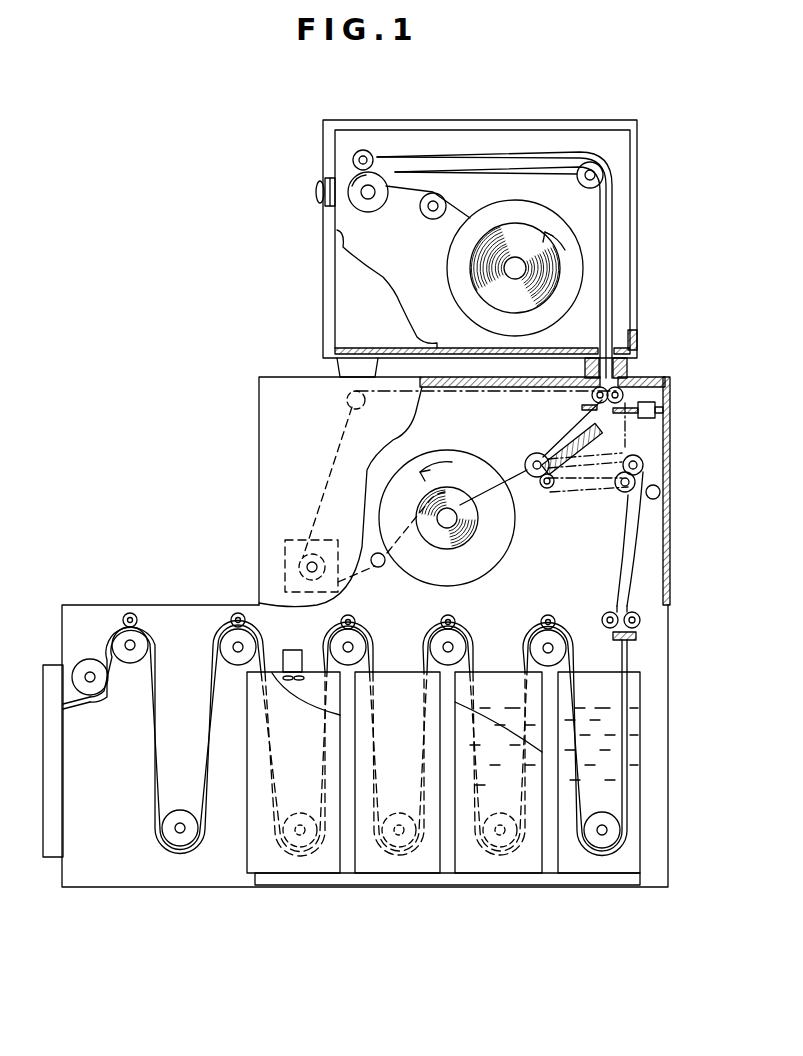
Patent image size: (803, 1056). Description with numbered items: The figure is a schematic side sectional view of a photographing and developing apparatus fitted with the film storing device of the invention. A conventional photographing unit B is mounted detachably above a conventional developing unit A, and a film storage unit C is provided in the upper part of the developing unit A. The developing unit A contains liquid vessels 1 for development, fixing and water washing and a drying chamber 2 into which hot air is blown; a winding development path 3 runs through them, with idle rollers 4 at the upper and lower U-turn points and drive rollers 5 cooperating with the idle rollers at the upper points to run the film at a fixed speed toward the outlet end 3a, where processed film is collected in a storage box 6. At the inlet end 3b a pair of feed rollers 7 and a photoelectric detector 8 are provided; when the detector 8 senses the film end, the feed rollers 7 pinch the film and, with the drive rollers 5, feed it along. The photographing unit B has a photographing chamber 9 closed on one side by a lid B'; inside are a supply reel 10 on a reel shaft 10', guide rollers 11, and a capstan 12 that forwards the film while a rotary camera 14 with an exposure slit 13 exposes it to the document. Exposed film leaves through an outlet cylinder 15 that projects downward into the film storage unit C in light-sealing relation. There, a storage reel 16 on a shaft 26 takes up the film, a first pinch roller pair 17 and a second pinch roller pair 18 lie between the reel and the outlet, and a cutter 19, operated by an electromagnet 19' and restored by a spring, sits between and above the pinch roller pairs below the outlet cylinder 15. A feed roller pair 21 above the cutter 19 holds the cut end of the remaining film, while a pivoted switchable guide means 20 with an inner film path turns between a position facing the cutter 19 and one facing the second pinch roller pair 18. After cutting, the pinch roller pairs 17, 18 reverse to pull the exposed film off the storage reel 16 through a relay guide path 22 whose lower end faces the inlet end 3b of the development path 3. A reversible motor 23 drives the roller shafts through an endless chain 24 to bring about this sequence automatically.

The liquid vessels 1 is at (400, 862).
The drying chamber 2 is at (300, 862).
The development path 3 is at (213, 700).
The outlet end 3a is at (85, 700).
The inlet end 3b is at (612, 610).
The idle rollers 4 is at (165, 832).
The drive rollers 5 is at (340, 622).
The storage box 6 is at (53, 668).
The feed rollers 7 is at (606, 627).
The detector 8 is at (637, 637).
The photographing chamber 9 is at (510, 148).
The supply reel 10 is at (491, 268).
The reel shaft 10' is at (469, 291).
The guide rollers 11 is at (430, 213).
The capstan 12 is at (362, 205).
The exposure slit 13 is at (347, 172).
The rotary camera 14 is at (317, 193).
The outlet cylinder 15 is at (632, 362).
The storage reel 16 is at (505, 528).
The first pinch roller pair 17 is at (545, 493).
The second pinch roller pair 18 is at (648, 453).
The cutter 19 is at (665, 427).
The electromagnet 19' is at (680, 400).
The switchable guide means 20 is at (563, 432).
The feed roller pair 21 is at (640, 392).
The relay guide path 22 is at (630, 557).
The reversible motor 23 is at (300, 540).
The endless chain 24 is at (470, 393).
The shaft 26 is at (450, 530).
The developing unit A is at (148, 602).
The photographing unit B is at (509, 225).
The lid B' is at (359, 289).
The film storage unit C is at (256, 440).